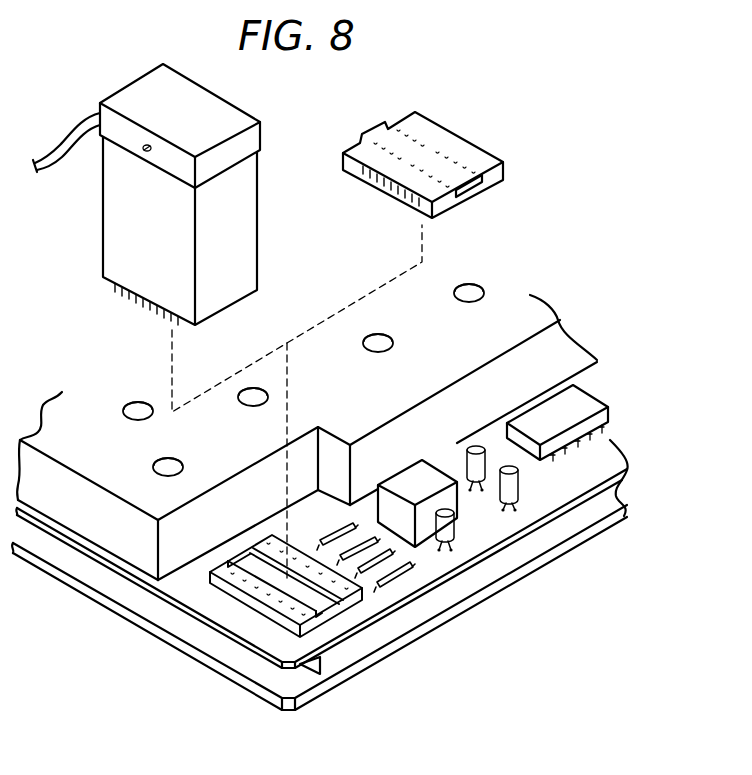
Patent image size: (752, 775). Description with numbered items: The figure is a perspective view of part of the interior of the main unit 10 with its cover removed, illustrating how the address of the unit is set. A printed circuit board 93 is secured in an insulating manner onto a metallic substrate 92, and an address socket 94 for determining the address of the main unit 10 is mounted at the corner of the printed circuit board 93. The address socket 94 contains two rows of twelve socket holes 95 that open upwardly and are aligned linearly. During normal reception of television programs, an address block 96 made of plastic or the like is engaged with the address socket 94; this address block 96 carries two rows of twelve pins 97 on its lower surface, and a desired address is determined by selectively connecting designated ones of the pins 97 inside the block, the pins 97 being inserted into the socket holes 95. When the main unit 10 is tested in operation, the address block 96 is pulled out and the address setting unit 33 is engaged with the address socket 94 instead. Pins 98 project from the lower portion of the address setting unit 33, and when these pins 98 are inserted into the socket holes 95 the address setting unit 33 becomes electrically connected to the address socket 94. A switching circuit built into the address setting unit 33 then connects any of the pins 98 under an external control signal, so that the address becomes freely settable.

The main unit 10 is at (153, 644).
The address setting unit 33 is at (113, 225).
The metallic substrate 92 is at (273, 683).
The printed circuit board 93 is at (245, 632).
The address socket 94 is at (350, 602).
The socket holes 95 is at (268, 595).
The address block 96 is at (463, 147).
The pins 97 is at (392, 205).
The pins 98 is at (146, 305).